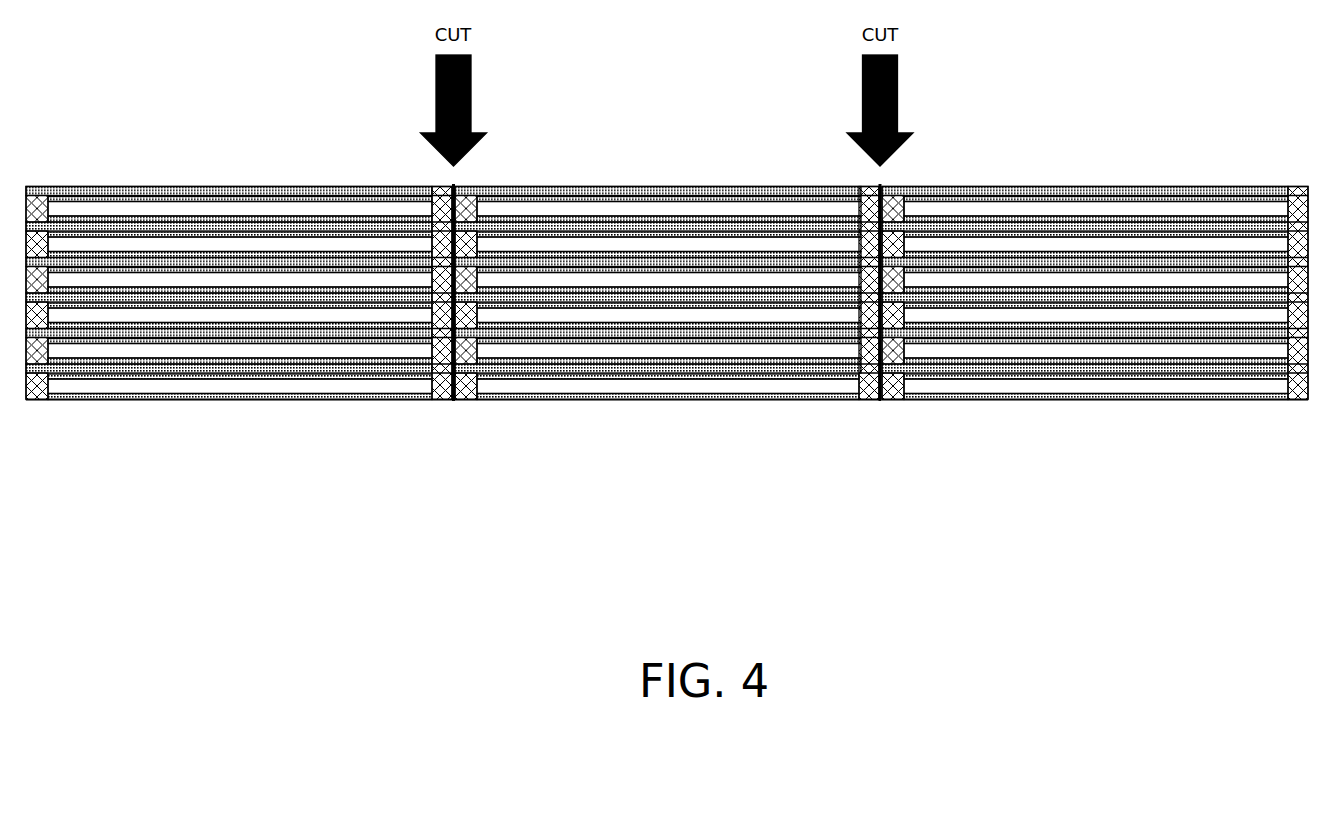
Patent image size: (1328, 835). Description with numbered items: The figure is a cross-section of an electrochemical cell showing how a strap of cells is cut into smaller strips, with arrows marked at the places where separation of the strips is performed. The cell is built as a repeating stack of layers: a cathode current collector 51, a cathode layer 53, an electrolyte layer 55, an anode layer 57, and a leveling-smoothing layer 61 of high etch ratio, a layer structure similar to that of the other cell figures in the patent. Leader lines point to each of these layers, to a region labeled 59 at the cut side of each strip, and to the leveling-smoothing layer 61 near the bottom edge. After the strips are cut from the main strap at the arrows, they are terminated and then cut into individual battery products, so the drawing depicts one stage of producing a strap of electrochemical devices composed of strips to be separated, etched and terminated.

The cathode current collector 51 is at (67, 376).
The cathode layer 53 is at (148, 396).
The electrolyte layer 55 is at (196, 393).
The anode layer 57 is at (242, 380).
The edge crosshatched spacer 59 is at (444, 344).
The leveling-smoothing layer 61 is at (442, 406).